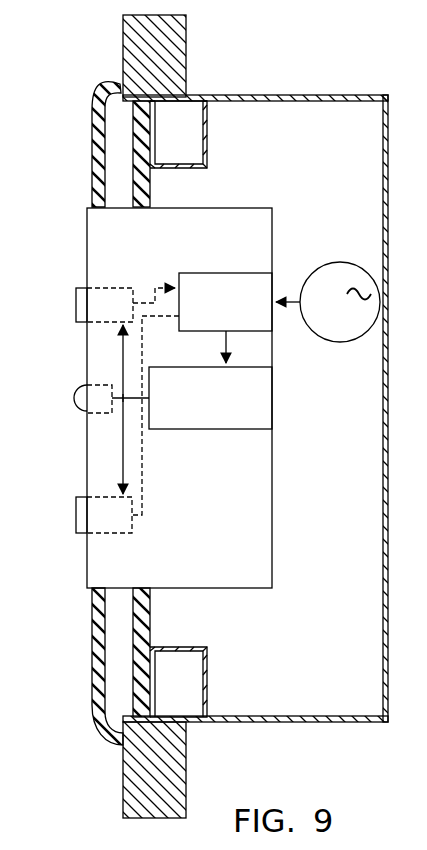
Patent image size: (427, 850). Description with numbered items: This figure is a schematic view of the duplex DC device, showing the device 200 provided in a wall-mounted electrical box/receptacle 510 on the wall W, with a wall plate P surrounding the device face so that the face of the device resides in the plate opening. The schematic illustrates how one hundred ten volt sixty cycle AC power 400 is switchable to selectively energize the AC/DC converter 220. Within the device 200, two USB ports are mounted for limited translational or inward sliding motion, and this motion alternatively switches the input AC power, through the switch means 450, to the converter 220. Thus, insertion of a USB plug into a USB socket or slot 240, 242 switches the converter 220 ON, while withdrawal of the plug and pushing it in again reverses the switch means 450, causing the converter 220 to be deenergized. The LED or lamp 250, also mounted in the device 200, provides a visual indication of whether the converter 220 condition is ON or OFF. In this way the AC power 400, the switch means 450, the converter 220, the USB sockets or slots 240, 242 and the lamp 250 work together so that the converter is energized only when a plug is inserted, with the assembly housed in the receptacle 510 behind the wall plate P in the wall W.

The electrical box/receptacle 510 is at (312, 95).
The wall W is at (123, 48).
The wall plate P is at (92, 700).
The device 200 is at (230, 202).
The switch means 450 is at (203, 272).
The converter (AC/DC) 220 is at (197, 429).
The 110 volt 60 cycle AC power 400 is at (318, 262).
The USB socket or slot 240 is at (76, 298).
The LED or lamp 250 is at (75, 396).
The USB socket or slot 242 is at (76, 513).